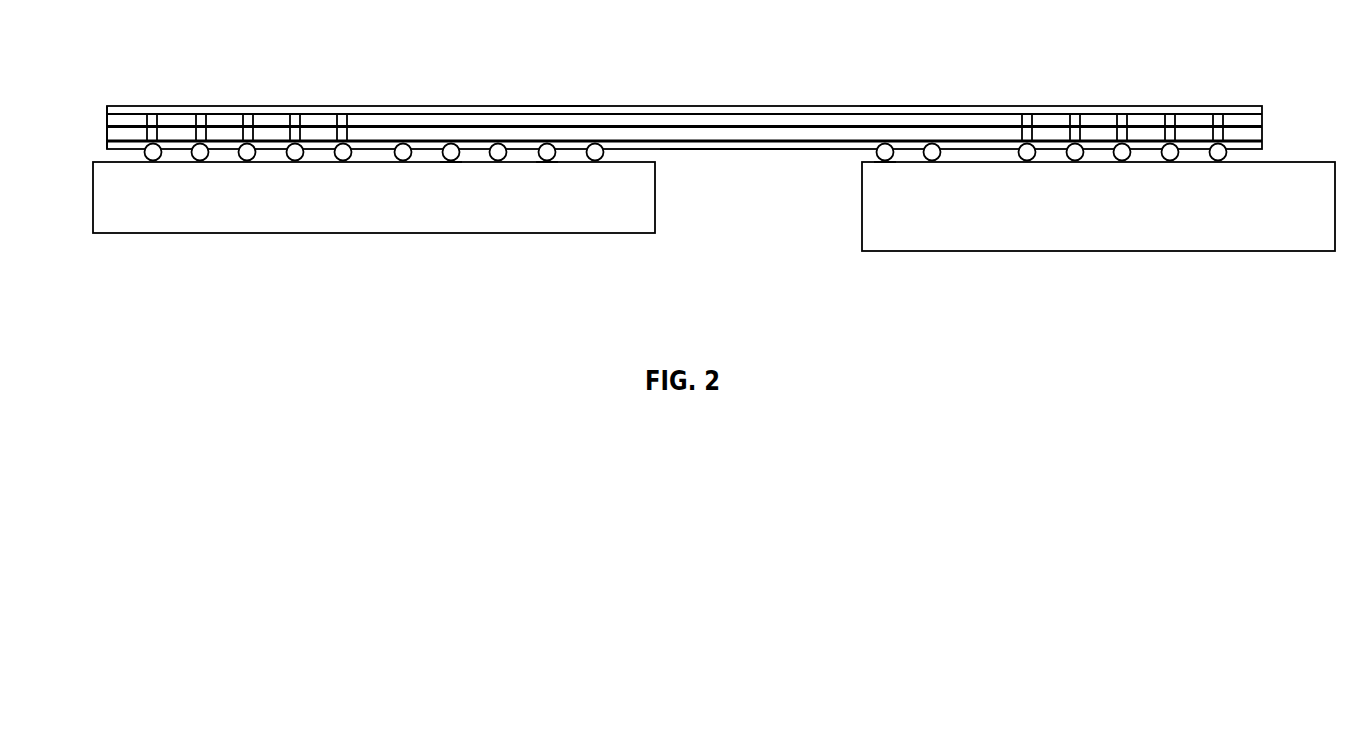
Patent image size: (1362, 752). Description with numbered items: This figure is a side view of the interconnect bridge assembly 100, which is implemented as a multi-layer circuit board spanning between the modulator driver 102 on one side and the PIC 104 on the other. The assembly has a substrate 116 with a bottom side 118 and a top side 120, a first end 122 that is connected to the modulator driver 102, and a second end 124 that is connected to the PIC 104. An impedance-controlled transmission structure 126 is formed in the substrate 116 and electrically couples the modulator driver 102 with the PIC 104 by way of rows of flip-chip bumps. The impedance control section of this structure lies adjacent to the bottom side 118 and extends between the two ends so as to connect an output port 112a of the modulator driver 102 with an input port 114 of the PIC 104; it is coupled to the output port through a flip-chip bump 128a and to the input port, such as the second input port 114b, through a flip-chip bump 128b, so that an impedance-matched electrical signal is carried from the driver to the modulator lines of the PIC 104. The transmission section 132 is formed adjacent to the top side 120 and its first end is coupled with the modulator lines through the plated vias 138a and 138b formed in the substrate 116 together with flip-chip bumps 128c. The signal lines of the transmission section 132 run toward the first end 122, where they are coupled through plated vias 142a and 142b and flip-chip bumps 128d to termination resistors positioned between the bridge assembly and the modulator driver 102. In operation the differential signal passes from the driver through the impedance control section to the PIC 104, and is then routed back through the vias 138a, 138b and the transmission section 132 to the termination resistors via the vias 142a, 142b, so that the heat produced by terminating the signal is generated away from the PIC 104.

The interconnect bridge assembly 100 is at (130, 68).
The modulator driver 102 is at (1072, 251).
The PIC 104 is at (352, 233).
The output port 112a is at (888, 163).
The input port 114 is at (546, 162).
The second input port 114b is at (447, 162).
The substrate 116 is at (549, 105).
The bottom side 118 is at (771, 149).
The top side 120 is at (736, 106).
The first end 122 is at (1265, 120).
The second end 124 is at (107, 130).
The impedance-controlled transmission structure 126 is at (712, 149).
The flip-chip bump 128a is at (884, 163).
The flip-chip bump 128b is at (453, 162).
The flip-chip bump 128c is at (200, 162).
The flip-chip bump 128d is at (1075, 163).
The transmission section 132 is at (903, 106).
The plated via 138a is at (203, 127).
The plated via 138b is at (292, 128).
The plated via 142a is at (1177, 118).
The plated via 142b is at (1083, 118).